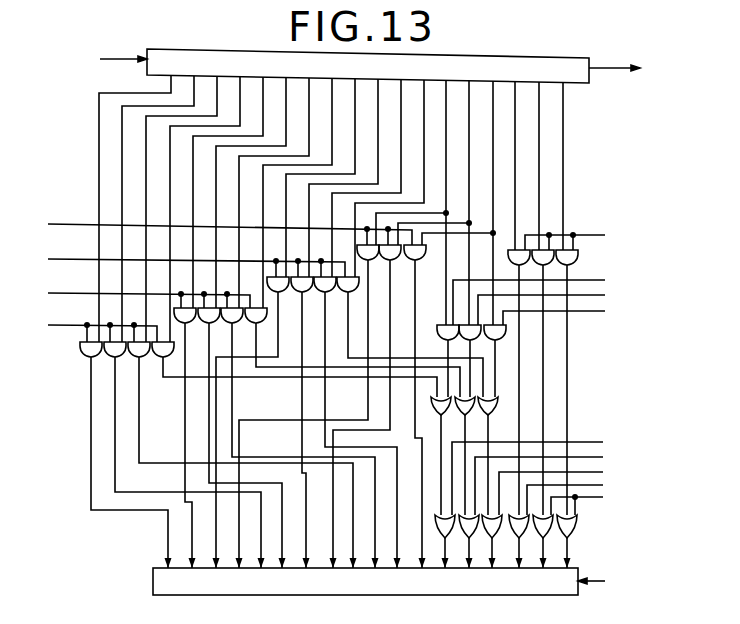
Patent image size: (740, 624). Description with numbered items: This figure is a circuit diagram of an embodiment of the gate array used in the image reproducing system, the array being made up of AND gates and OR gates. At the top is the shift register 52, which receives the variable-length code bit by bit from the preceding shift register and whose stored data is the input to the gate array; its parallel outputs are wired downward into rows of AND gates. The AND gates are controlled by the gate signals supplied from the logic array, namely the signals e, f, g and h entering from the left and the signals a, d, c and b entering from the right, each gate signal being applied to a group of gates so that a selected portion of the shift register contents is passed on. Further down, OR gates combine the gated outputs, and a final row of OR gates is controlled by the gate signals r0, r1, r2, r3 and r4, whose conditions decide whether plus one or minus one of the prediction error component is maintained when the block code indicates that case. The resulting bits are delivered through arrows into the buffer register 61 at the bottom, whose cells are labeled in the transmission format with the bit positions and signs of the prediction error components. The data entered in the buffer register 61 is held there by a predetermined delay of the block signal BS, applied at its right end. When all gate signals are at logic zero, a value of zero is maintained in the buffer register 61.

The shift register 52 is at (571, 58).
The buffer register 61 is at (153, 580).
The gate signal a is at (577, 237).
The gate signal b is at (566, 315).
The gate signal c is at (553, 305).
The gate signal d is at (541, 296).
The gate signal e is at (222, 229).
The gate signal f is at (189, 263).
The gate signal g is at (141, 295).
The gate signal h is at (95, 329).
The gate signal r0 is at (539, 473).
The gate signal r1 is at (551, 480).
The gate signal r2 is at (563, 488).
The gate signal r3 is at (577, 495).
The gate signal r4 is at (589, 502).
The block signal BS is at (605, 582).